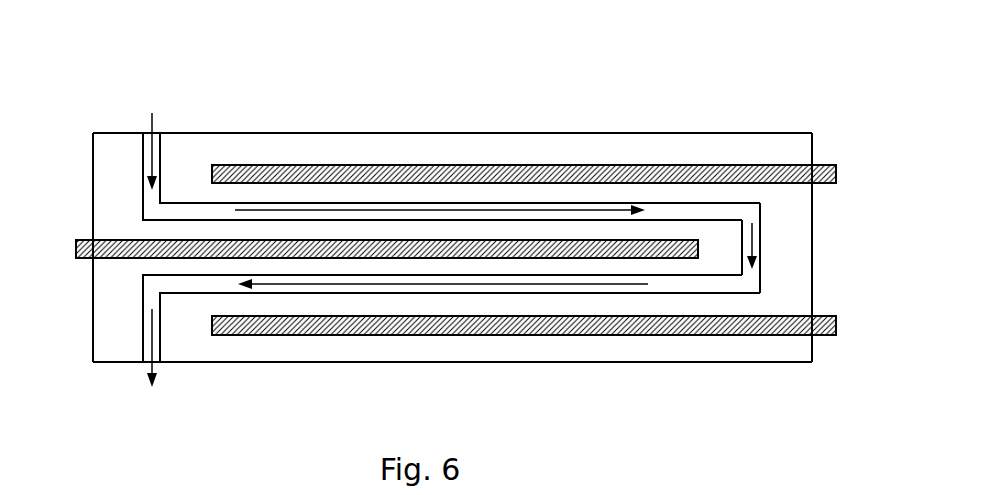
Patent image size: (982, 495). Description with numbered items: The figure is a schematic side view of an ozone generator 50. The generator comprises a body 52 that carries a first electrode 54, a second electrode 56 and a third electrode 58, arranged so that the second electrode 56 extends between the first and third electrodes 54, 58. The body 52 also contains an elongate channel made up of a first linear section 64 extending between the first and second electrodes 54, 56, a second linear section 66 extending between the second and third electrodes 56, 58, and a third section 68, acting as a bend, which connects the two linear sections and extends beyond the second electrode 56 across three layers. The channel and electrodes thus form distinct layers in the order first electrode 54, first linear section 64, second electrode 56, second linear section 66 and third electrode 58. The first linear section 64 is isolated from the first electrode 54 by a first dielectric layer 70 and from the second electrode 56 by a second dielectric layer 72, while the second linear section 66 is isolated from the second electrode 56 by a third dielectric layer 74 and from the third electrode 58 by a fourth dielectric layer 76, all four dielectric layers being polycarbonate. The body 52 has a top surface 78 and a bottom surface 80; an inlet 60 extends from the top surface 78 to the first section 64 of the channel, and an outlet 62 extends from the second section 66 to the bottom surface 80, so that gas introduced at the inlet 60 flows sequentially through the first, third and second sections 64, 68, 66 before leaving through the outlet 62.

The ozone generator 50 is at (118, 63).
The body 52 is at (787, 142).
The first electrode 54 is at (467, 167).
The second electrode 56 is at (73, 255).
The third electrode 58 is at (733, 326).
The inlet 60 is at (153, 128).
The outlet 62 is at (156, 358).
The first linear section 64 is at (283, 204).
The second linear section 66 is at (421, 293).
The third section 68 is at (757, 242).
The first dielectric layer 70 is at (378, 192).
The second dielectric layer 72 is at (572, 230).
The third dielectric layer 74 is at (535, 265).
The fourth dielectric layer 76 is at (626, 303).
The top surface 78 is at (645, 133).
The bottom surface 80 is at (276, 363).